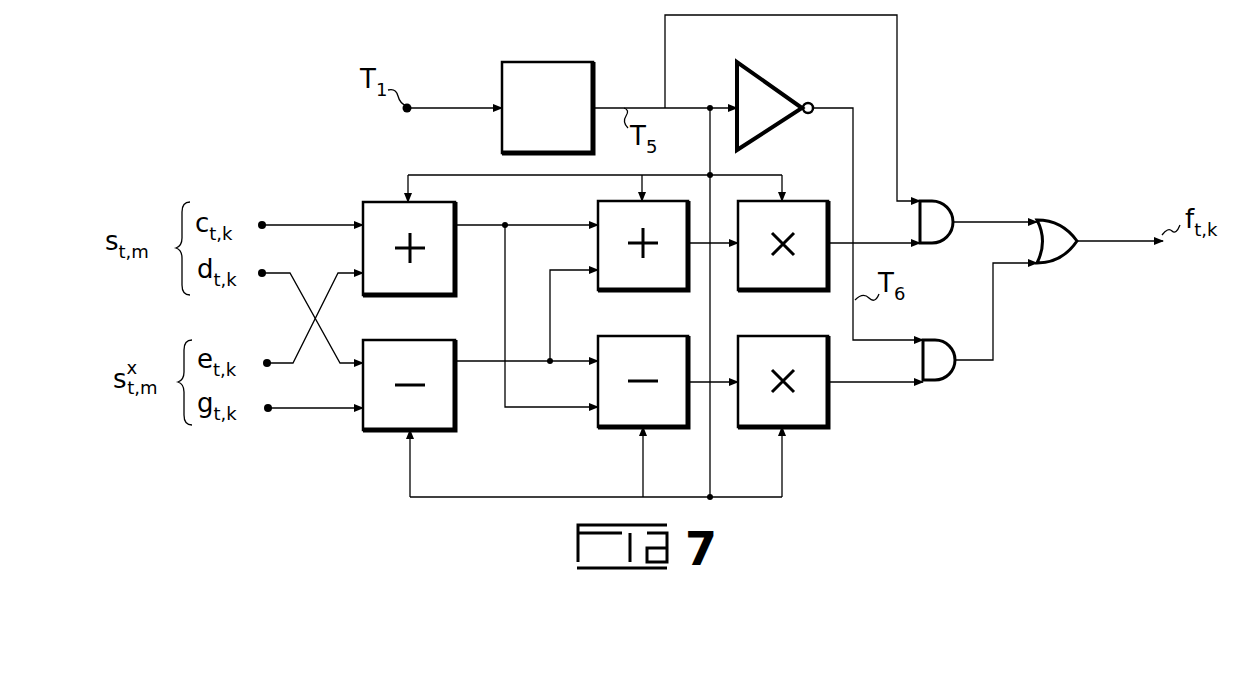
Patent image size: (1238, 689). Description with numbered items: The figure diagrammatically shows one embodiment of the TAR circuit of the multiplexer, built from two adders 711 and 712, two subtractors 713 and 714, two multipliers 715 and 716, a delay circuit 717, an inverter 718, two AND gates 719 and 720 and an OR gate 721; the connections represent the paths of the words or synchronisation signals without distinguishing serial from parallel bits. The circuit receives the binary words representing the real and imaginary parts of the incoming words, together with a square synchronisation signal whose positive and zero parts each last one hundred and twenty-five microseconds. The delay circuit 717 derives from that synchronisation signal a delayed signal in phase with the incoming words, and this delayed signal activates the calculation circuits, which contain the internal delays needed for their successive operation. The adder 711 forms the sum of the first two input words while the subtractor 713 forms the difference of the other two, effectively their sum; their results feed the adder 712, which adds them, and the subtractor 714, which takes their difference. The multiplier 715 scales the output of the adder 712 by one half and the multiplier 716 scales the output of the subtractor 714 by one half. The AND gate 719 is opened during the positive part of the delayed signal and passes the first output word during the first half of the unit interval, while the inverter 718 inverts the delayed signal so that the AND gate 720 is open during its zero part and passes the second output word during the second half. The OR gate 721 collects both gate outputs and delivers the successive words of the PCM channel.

The adder 711 is at (392, 200).
The adder 712 is at (638, 292).
The subtractor 713 is at (448, 432).
The subtractor 714 is at (608, 429).
The multiplier 715 is at (785, 292).
The multiplier 716 is at (818, 429).
The delay circuit 717 is at (551, 66).
The inverter 718 is at (772, 92).
The AND gate 719 is at (940, 198).
The AND gate 720 is at (948, 380).
The OR gate 721 is at (1064, 258).